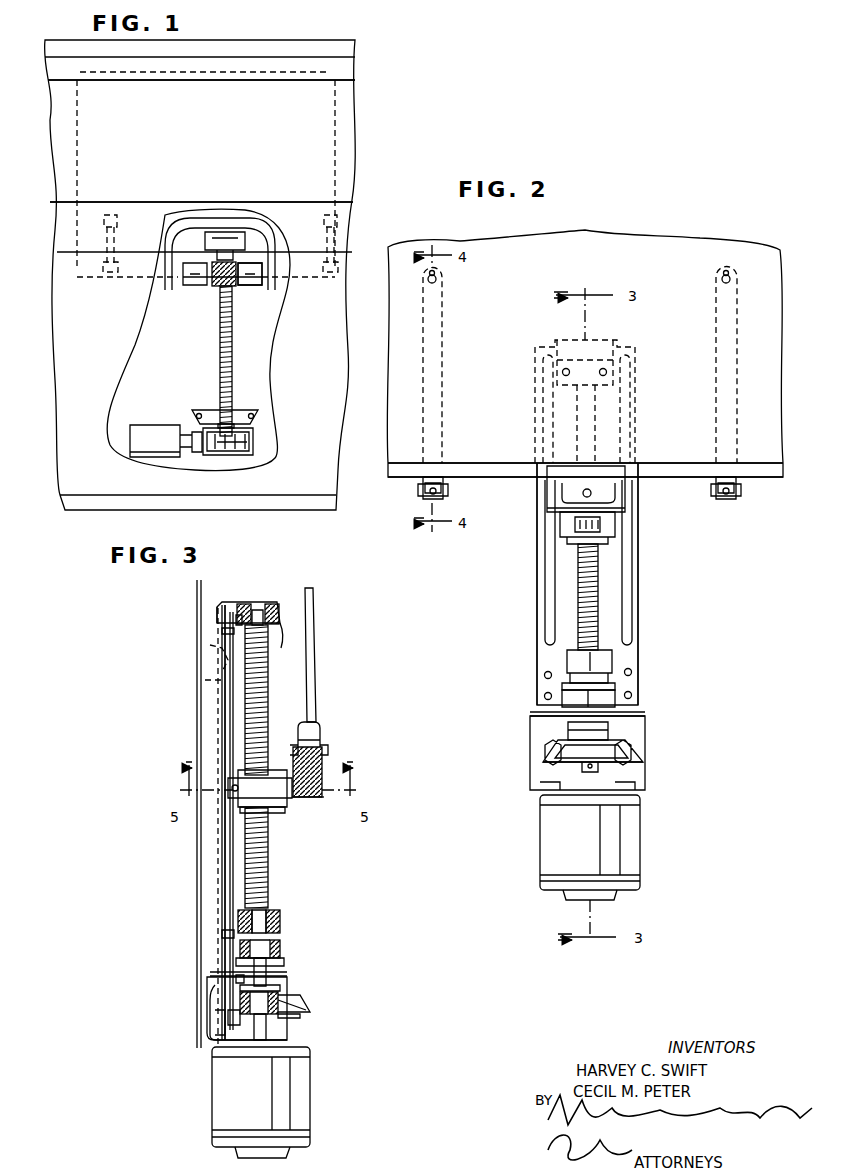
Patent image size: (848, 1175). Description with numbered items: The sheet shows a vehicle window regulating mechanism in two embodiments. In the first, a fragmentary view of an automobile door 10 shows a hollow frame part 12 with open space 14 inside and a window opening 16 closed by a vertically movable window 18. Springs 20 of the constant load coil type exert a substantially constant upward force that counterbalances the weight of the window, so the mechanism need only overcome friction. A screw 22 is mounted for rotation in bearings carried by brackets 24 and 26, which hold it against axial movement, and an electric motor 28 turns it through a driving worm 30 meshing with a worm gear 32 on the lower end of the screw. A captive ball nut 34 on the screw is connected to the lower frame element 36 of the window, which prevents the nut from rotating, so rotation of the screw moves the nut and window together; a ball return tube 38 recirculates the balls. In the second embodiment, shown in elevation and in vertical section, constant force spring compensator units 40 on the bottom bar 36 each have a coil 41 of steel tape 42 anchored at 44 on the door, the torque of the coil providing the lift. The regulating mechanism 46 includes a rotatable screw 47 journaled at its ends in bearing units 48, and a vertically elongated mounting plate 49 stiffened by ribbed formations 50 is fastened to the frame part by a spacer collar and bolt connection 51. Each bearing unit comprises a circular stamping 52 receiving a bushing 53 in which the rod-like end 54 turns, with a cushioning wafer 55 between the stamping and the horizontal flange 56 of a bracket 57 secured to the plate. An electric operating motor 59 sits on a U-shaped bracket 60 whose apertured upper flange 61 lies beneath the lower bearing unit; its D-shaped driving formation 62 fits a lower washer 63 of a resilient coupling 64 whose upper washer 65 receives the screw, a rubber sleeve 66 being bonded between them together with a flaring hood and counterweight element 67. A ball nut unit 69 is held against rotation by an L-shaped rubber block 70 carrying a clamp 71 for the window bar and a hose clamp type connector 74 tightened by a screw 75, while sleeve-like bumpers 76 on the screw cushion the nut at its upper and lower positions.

In FIG. 1, the automobile door 10 is at (346, 325).
In FIG. 1, the hollow frame part 12 is at (76, 353).
In FIG. 3, the hollow frame part 12 is at (196, 870).
In FIG. 1, the open space 14 is at (136, 382).
In FIG. 1, the window opening 16 is at (63, 203).
In FIG. 1, the window 18 is at (318, 132).
In FIG. 2, the window 18 is at (677, 249).
In FIG. 3, the window 18 is at (318, 669).
In FIG. 1, the springs 20 is at (127, 215).
In FIG. 1, the screw 22 is at (232, 352).
In FIG. 1, the bracket 24 is at (205, 238).
In FIG. 1, the bracket 26 is at (208, 410).
In FIG. 1, the electric motor 28 is at (148, 445).
In FIG. 1, the driving worm 30 is at (256, 455).
In FIG. 1, the worm gear 32 is at (215, 458).
In FIG. 1, the ball nut 34 is at (243, 284).
In FIG. 1, the lower frame element 36 is at (128, 285).
In FIG. 2, the lower frame element 36 is at (500, 476).
In FIG. 3, the lower frame element 36 is at (320, 726).
In FIG. 1, the ball return tube 38 is at (216, 290).
In FIG. 2, the constant force spring compensator units 40 is at (426, 500).
In FIG. 2, the coil 41 is at (748, 470).
In FIG. 2, the steel tape 42 is at (445, 366).
In FIG. 2, the anchor 44 is at (731, 273).
In FIG. 2, the regulating mechanism 46 is at (526, 590).
In FIG. 3, the regulating mechanism 46 is at (330, 892).
In FIG. 2, the rotatable screw 47 is at (600, 581).
In FIG. 3, the rotatable screw 47 is at (275, 846).
In FIG. 2, the bearing units 48 is at (612, 345).
In FIG. 3, the bearing units 48 is at (276, 604).
In FIG. 2, the mounting plate 49 is at (641, 610).
In FIG. 3, the mounting plate 49 is at (222, 719).
In FIG. 2, the ribbed formations 50 is at (550, 633).
In FIG. 3, the ribbed formations 50 is at (231, 749).
In FIG. 3, the spacer collar and bolt connection 51 is at (210, 646).
In FIG. 2, the circular stamping 52 is at (616, 684).
In FIG. 3, the circular stamping 52 is at (281, 626).
In FIG. 3, the bushing 53 is at (238, 631).
In FIG. 3, the rod-like end 54 is at (289, 984).
In FIG. 2, the cushioning wafer 55 is at (616, 702).
In FIG. 3, the cushioning wafer 55 is at (290, 961).
In FIG. 3, the horizontal flange 56 is at (214, 990).
In FIG. 2, the bracket 57 is at (547, 686).
In FIG. 3, the bracket 57 is at (236, 620).
In FIG. 2, the electric operating motor 59 is at (566, 845).
In FIG. 3, the electric operating motor 59 is at (236, 1098).
In FIG. 2, the U-shaped bracket 60 is at (643, 735).
In FIG. 3, the U-shaped bracket 60 is at (210, 1046).
In FIG. 2, the upper flange 61 is at (648, 712).
In FIG. 3, the upper flange 61 is at (284, 975).
In FIG. 3, the D-shaped driving formation 62 is at (302, 1011).
In FIG. 3, the lower washer 63 is at (289, 1025).
In FIG. 2, the resilient coupling 64 is at (541, 768).
In FIG. 3, the resilient coupling 64 is at (302, 993).
In FIG. 2, the upper washer 65 is at (568, 731).
In FIG. 3, the upper washer 65 is at (244, 986).
In FIG. 2, the rubber sleeve 66 is at (591, 736).
In FIG. 3, the rubber sleeve 66 is at (246, 1014).
In FIG. 2, the hood and counterweight element 67 is at (616, 760).
In FIG. 3, the hood and counterweight element 67 is at (292, 1000).
In FIG. 2, the ball nut unit 69 is at (556, 545).
In FIG. 3, the ball nut unit 69 is at (240, 816).
In FIG. 3, the L-shaped block 70 is at (316, 798).
In FIG. 2, the clamp 71 is at (564, 472).
In FIG. 3, the clamp 71 is at (324, 752).
In FIG. 3, the hose clamp type connector 74 is at (262, 776).
In FIG. 3, the screw 75 is at (233, 796).
In FIG. 2, the sleeve-like bumpers 76 is at (612, 661).
In FIG. 3, the sleeve-like bumpers 76 is at (273, 910).